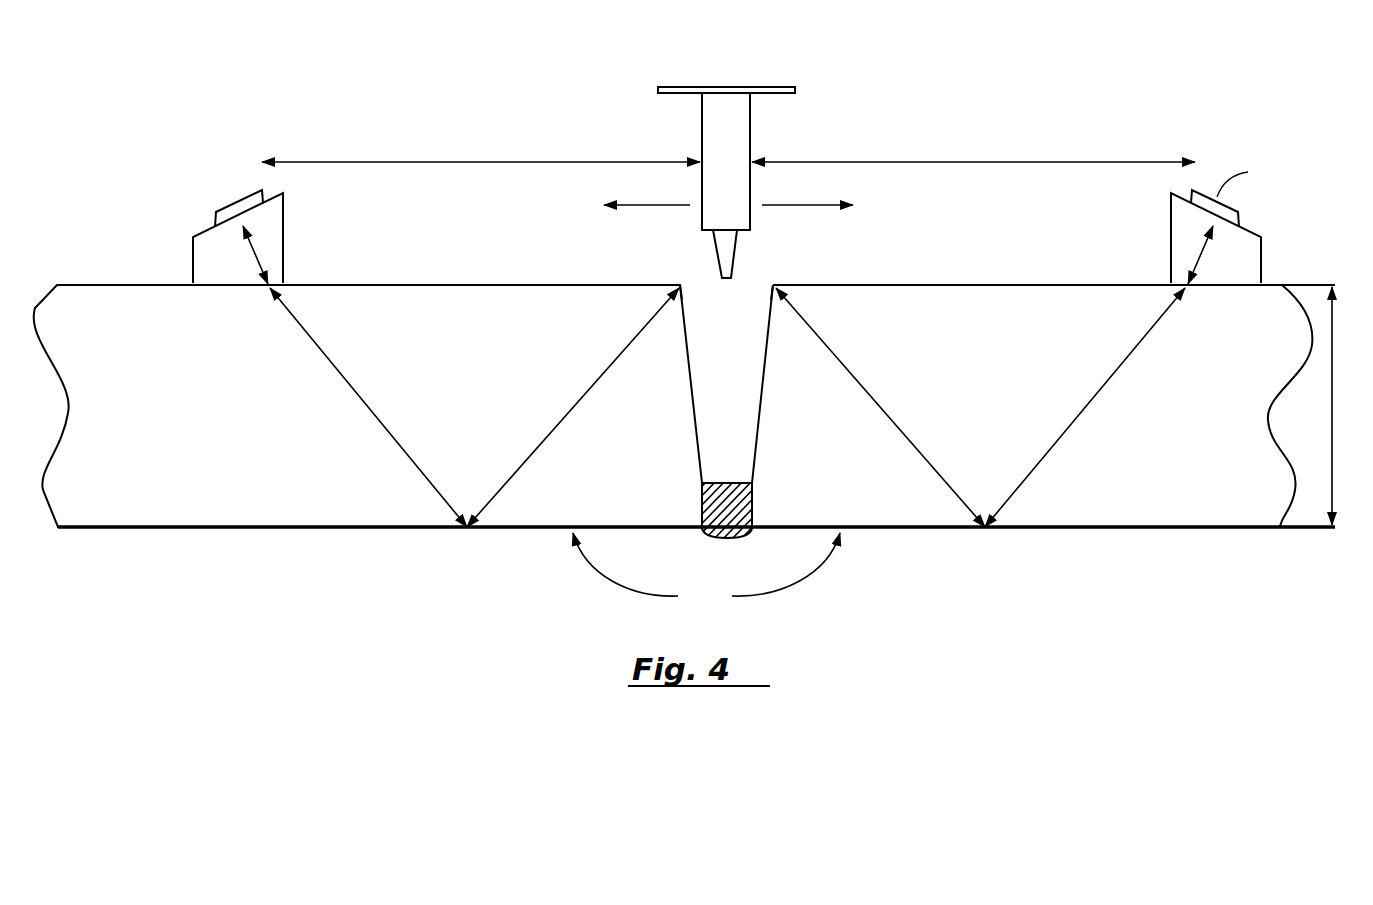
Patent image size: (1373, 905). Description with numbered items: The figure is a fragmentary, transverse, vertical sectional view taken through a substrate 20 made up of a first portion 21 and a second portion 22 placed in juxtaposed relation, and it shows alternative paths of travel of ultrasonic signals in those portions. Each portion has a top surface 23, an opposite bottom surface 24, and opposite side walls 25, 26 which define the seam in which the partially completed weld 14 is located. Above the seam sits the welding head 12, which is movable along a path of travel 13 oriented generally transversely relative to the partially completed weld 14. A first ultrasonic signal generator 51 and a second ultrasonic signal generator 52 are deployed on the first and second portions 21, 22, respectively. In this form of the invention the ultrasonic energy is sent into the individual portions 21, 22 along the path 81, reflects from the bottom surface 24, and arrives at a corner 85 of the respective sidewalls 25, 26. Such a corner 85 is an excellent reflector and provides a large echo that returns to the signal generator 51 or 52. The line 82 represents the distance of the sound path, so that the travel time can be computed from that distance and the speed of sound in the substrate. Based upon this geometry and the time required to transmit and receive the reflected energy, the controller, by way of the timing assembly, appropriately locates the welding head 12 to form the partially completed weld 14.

The welding head 12 is at (720, 108).
The path of travel 13 is at (627, 207).
The partially completed weld 14 is at (723, 512).
The substrate 20 is at (706, 575).
The first portion 21 is at (1209, 434).
The second portion 22 is at (246, 434).
The top surface 23 is at (375, 285).
The bottom surface 24 is at (157, 528).
The side wall 25 is at (693, 384).
The side wall 26 is at (660, 384).
The first ultrasonic signal generator 51 is at (1238, 242).
The second ultrasonic signal generator 52 is at (280, 218).
The path of the ultrasonic energy 81 is at (357, 387).
The distance of the sound path 82 is at (387, 162).
The corner 85 is at (680, 285).